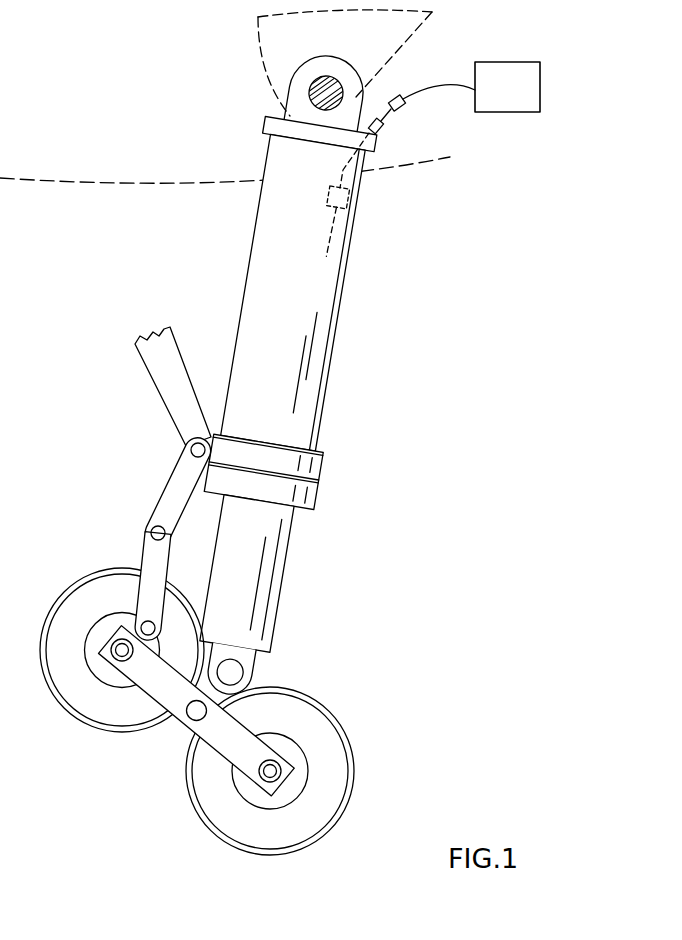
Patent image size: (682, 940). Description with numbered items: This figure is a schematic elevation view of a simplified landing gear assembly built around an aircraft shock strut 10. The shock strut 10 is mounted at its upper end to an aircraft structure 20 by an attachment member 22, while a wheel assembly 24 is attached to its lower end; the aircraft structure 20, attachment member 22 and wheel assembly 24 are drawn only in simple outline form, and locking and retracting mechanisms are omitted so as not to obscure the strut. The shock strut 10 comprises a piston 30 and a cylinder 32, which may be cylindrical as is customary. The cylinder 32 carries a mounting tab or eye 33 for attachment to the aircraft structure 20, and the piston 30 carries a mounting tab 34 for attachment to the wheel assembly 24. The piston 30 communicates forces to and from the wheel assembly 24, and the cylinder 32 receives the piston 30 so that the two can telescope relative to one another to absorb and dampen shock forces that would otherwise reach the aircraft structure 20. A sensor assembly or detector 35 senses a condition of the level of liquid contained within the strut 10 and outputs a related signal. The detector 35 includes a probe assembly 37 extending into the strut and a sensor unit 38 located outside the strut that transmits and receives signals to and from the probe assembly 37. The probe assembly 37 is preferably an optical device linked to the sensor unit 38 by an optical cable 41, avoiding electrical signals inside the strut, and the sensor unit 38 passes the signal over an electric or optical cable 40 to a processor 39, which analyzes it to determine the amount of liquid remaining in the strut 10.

The aircraft shock strut 10 is at (319, 365).
The aircraft structure 20 is at (432, 164).
The attachment member 22 is at (262, 58).
The wheel assembly 24 is at (354, 719).
The piston 30 is at (265, 576).
The cylinder 32 is at (340, 281).
The mounting tab 33 is at (351, 86).
The mounting tab 34 is at (250, 677).
The sensor assembly 35 is at (462, 140).
The probe assembly 37 is at (346, 196).
The sensor unit 38 is at (404, 108).
The processor 39 is at (540, 78).
The cable 40 is at (432, 88).
The optical cable 41 is at (432, 184).